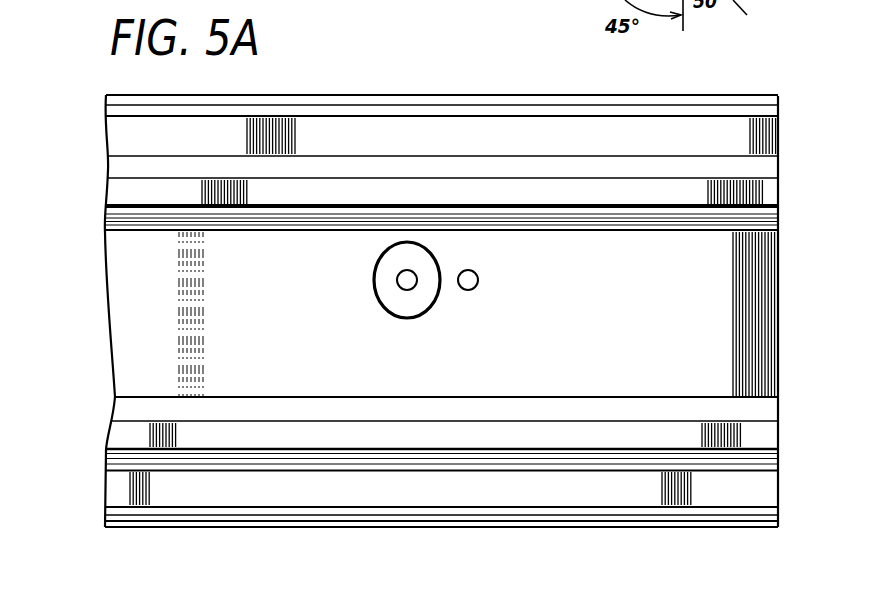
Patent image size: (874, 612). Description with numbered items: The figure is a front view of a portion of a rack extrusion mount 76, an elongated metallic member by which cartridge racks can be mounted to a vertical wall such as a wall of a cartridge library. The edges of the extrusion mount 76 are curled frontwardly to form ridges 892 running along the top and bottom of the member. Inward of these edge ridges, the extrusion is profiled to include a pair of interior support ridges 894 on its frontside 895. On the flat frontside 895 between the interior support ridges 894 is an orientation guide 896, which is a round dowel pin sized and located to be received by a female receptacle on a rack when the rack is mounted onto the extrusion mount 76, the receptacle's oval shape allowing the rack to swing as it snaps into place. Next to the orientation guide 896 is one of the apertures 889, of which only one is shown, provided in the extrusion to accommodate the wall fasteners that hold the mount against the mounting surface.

The rack extrusion mount 76 is at (487, 331).
The ridges 892 is at (763, 120).
The interior support ridges 894 is at (772, 196).
The frontside 895 is at (687, 370).
The orientation guide 896 is at (373, 275).
The apertures 889 is at (479, 278).